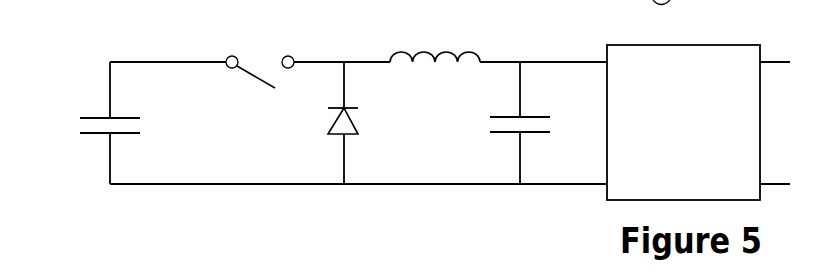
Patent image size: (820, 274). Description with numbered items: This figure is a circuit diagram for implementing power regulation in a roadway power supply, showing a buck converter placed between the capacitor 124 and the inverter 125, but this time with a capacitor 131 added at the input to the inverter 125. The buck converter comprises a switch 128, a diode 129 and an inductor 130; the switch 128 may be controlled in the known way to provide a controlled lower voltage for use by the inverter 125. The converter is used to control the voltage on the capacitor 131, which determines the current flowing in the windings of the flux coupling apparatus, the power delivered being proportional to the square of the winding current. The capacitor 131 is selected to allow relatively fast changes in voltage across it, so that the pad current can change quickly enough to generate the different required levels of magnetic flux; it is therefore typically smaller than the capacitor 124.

The capacitor 124 is at (87, 136).
The switch 128 is at (258, 82).
The diode 129 is at (339, 136).
The inductor 130 is at (430, 50).
The capacitor 131 is at (503, 133).
The inverter 125 is at (708, 127).